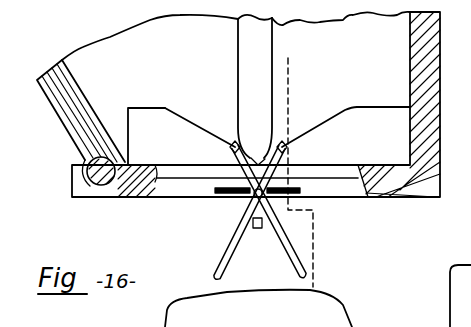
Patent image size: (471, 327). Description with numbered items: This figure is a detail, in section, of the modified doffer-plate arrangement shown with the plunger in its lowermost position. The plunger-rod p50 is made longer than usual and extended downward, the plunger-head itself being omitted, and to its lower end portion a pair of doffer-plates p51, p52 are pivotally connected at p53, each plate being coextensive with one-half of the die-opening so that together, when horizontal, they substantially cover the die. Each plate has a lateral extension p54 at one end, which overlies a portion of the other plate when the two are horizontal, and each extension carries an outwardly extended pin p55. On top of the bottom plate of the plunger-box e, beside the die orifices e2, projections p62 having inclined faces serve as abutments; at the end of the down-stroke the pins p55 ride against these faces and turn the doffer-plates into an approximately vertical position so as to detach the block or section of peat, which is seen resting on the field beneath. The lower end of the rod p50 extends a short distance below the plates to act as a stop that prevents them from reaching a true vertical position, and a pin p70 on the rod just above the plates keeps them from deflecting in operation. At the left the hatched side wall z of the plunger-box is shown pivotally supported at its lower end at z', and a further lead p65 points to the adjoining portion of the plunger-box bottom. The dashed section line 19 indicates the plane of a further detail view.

The tool band z is at (81, 123).
The roller z' is at (84, 195).
The plunger-rod p50 is at (272, 82).
The doffer-plate p51 is at (297, 258).
The doffer-plate p52 is at (232, 242).
The pivot p53 is at (253, 197).
The lateral extension p54 is at (282, 147).
The pin p55 is at (233, 143).
The projection p62 is at (187, 100).
The housing top p65 is at (344, 111).
The pin p70 is at (303, 180).
The section line 19 is at (323, 45).
The orifices e2 is at (340, 197).
The plunger-box e is at (390, 197).